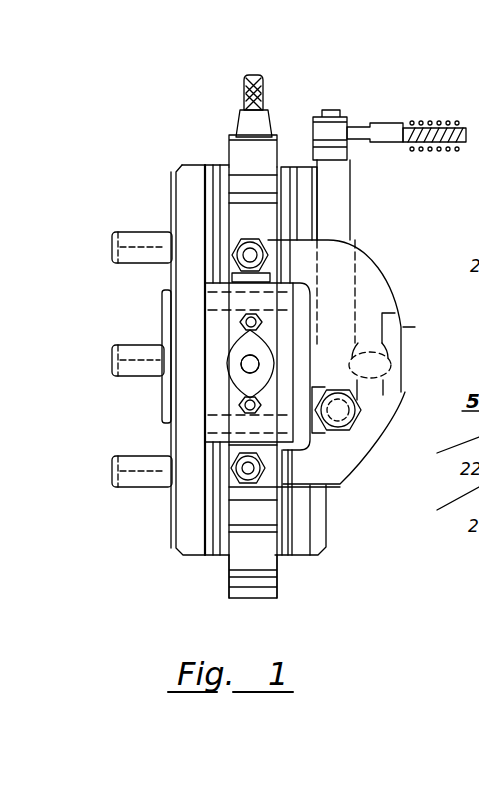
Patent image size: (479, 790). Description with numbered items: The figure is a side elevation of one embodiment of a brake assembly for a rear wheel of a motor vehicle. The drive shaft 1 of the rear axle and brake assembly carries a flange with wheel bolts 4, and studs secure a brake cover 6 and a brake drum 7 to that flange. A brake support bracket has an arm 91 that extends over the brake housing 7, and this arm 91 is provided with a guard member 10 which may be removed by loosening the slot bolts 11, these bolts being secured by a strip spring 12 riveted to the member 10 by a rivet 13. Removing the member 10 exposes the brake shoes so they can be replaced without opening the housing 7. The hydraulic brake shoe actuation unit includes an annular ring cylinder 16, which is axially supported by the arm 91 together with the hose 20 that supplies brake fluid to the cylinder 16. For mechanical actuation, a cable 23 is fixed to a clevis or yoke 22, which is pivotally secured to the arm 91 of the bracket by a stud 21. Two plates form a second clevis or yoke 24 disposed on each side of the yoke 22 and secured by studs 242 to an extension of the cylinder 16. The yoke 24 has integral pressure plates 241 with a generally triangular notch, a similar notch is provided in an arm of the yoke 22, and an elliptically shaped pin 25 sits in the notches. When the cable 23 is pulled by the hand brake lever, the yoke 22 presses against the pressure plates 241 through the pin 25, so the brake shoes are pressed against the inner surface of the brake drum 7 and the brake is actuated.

The drive shaft 1 is at (252, 343).
The wheel bolts 4 is at (143, 247).
The brake cover 6 is at (197, 183).
The brake drum 7 is at (307, 177).
The arm 91 is at (300, 335).
The guard member 10 is at (228, 427).
The slot bolts 11 is at (245, 323).
The strip spring 12 is at (244, 362).
The rivet 13 is at (244, 368).
The ring cylinder 16 is at (248, 585).
The hose 20 is at (253, 122).
The stud 21 is at (338, 410).
The clevis or yoke 22 is at (330, 208).
The cable 23 is at (466, 132).
The clevis or yoke 24 is at (367, 297).
The pressure plates 241 is at (385, 403).
The studs 242 is at (440, 527).
The pin 25 is at (403, 326).